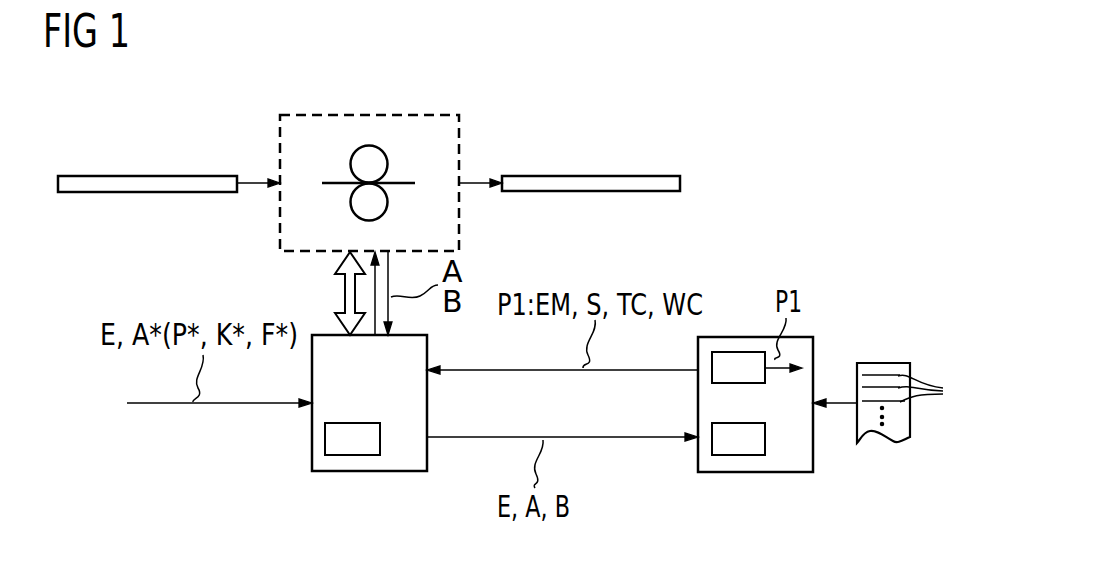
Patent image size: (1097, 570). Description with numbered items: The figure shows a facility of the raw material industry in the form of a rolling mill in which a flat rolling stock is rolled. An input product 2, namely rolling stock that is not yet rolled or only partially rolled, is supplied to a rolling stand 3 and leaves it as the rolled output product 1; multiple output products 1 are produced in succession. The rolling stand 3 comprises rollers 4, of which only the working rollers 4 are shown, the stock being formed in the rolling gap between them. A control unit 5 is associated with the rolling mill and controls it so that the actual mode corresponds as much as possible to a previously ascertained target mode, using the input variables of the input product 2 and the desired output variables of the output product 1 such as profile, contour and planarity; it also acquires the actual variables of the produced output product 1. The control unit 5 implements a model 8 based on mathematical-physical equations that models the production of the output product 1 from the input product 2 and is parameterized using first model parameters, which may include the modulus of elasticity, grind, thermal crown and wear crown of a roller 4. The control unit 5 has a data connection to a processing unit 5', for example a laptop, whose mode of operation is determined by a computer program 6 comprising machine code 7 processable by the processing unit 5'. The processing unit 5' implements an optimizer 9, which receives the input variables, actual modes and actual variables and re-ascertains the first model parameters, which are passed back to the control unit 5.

The output product 1 is at (592, 176).
The input product 2 is at (145, 176).
The rolling stand 3 is at (428, 148).
The working rollers 4 is at (370, 146).
The control unit 5 is at (369, 445).
The processing unit 5' is at (755, 446).
The computer program 6 is at (882, 363).
The machine code 7 is at (932, 391).
The model 8 is at (358, 455).
The optimizer 9 is at (745, 352).